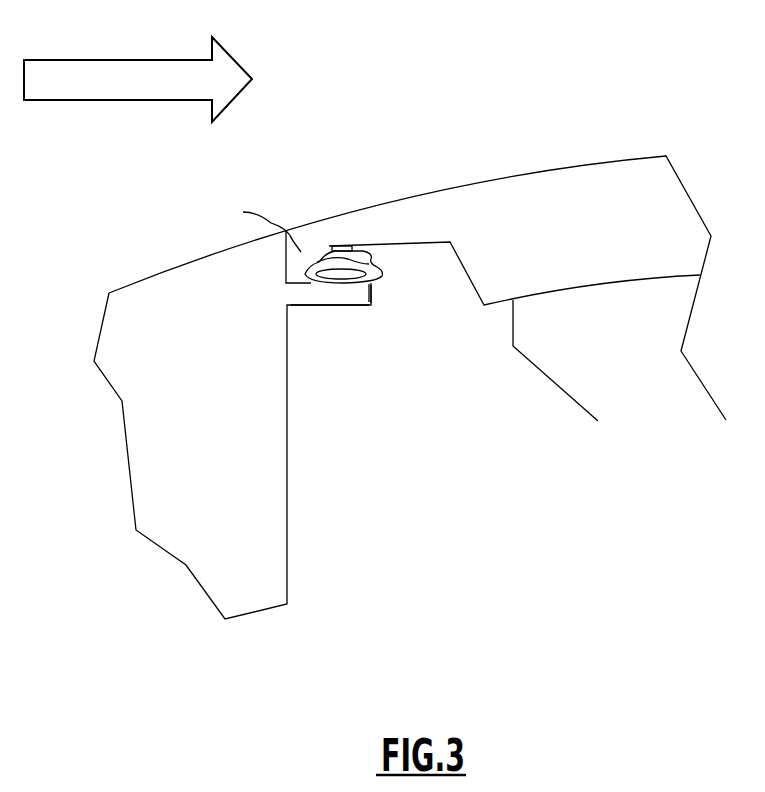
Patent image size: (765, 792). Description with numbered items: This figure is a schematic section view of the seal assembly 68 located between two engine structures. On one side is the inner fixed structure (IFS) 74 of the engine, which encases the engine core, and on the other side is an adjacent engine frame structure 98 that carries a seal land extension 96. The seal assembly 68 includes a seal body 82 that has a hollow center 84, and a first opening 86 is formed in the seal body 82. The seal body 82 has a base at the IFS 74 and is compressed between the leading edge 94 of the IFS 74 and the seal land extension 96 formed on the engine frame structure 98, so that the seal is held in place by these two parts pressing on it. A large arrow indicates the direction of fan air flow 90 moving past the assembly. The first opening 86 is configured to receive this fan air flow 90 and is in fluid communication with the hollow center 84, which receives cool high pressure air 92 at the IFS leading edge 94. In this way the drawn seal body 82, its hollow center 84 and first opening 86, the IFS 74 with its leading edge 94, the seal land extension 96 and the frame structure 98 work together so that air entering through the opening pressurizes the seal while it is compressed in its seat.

The fan air flow 90 is at (74, 82).
The inner fixed structure (IFS) 74 is at (635, 193).
The engine frame structure 98 is at (255, 478).
The hollow center 84 is at (322, 280).
The first opening 86 is at (317, 257).
The IFS leading edge 94 is at (316, 257).
The cool high pressure air 92 is at (262, 215).
The seal body 82 is at (356, 292).
The seal land extension 96 is at (352, 292).
The seal assembly 68 is at (380, 296).